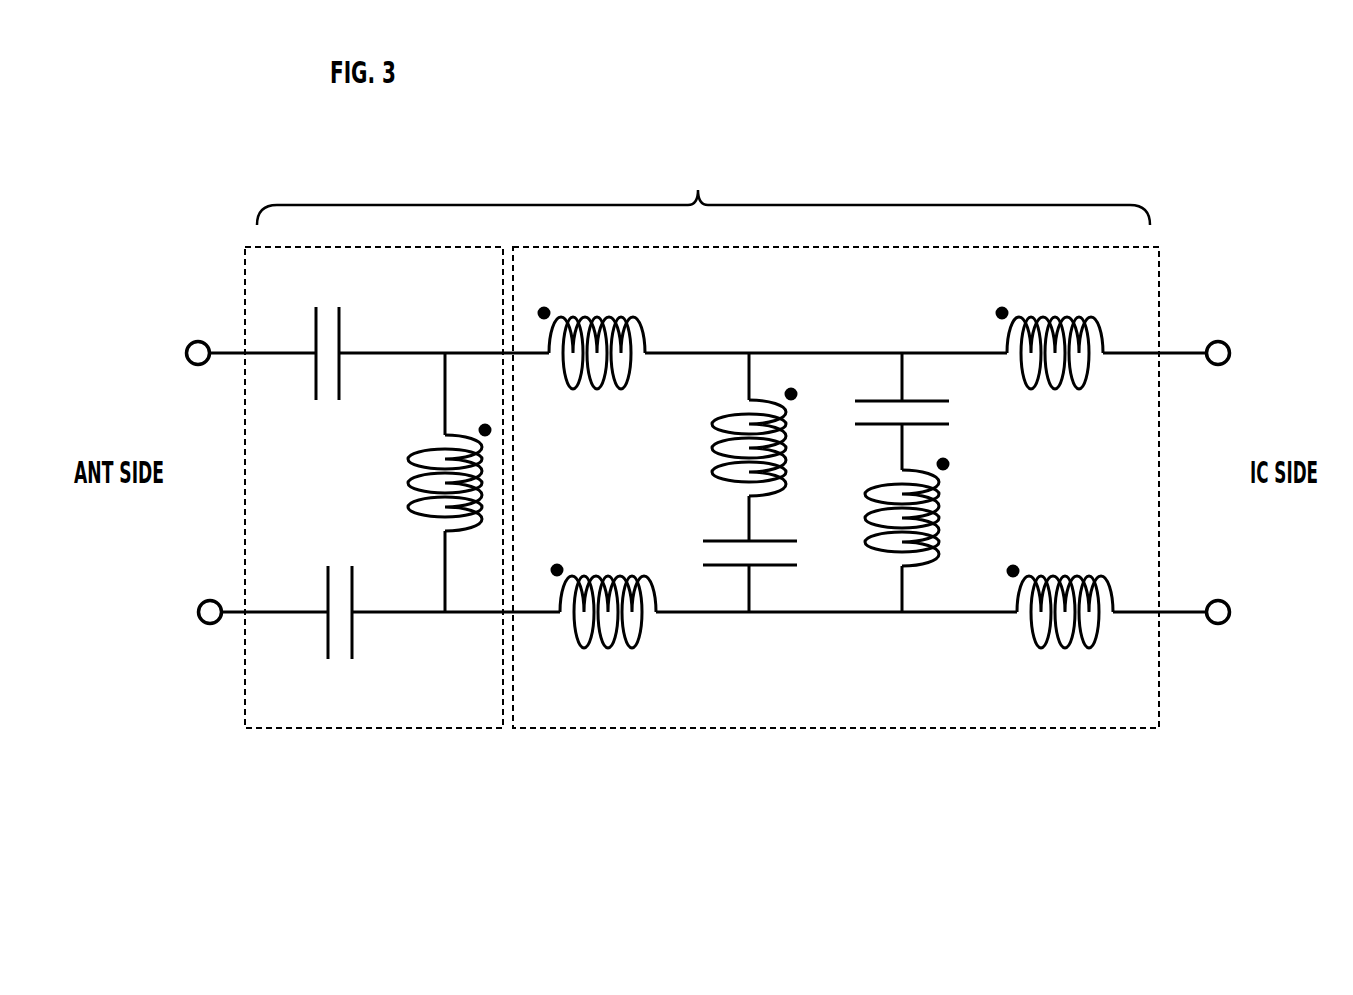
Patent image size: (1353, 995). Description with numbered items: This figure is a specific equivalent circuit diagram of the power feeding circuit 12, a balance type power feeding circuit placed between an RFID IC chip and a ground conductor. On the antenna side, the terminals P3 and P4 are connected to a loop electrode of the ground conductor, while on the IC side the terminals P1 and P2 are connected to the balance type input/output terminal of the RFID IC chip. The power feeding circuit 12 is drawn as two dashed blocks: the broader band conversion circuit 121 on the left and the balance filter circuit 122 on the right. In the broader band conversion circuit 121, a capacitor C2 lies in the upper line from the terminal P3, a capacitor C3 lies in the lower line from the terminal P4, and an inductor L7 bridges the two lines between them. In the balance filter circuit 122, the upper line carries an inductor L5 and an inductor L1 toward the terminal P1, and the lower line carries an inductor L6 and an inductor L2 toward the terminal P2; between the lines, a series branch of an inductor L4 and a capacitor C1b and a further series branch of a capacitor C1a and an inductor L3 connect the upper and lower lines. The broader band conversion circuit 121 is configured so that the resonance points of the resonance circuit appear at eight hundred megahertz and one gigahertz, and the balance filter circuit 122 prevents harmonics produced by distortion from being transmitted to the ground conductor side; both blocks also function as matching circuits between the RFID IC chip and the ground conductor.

The power feeding circuit 12 is at (703, 183).
The broader band conversion circuit 121 is at (374, 537).
The balance filter circuit 122 is at (836, 518).
The terminal P1 is at (1241, 357).
The terminal P2 is at (1241, 616).
The terminal P3 is at (178, 354).
The terminal P4 is at (184, 616).
The capacitor C2 is at (328, 332).
The capacitor C3 is at (340, 636).
The capacitor C1a is at (927, 411).
The capacitor C1b is at (725, 564).
The inductor L1 is at (1050, 331).
The inductor L2 is at (1060, 633).
The inductor L3 is at (921, 535).
The inductor L4 is at (732, 447).
The inductor L5 is at (592, 330).
The inductor L6 is at (604, 635).
The inductor L7 is at (432, 482).